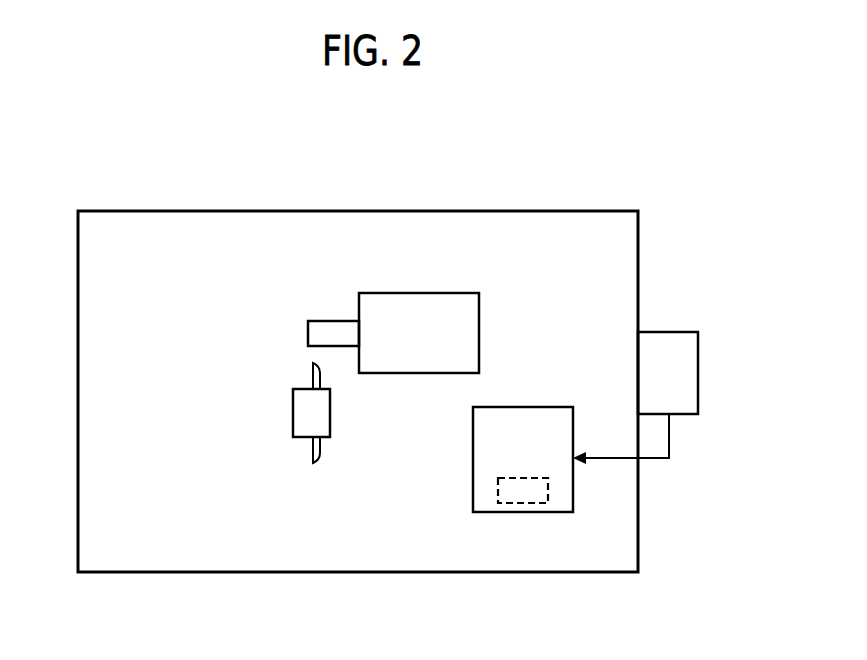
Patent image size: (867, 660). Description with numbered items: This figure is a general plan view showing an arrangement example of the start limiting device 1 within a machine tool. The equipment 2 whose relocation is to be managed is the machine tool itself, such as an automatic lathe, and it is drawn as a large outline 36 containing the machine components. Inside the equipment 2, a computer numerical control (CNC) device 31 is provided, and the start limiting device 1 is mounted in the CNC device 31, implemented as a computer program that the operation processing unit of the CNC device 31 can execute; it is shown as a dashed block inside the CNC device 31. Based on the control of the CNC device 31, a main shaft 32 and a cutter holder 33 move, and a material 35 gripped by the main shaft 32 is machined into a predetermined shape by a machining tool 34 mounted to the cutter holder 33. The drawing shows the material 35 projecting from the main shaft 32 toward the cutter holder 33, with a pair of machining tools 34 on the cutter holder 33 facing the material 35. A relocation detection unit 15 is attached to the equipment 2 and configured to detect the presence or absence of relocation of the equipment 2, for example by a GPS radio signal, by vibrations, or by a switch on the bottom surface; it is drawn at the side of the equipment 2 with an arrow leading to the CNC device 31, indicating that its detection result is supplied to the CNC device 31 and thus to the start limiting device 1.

The start limiting device 1 is at (522, 503).
The equipment 2 is at (376, 169).
The relocation detection unit 15 is at (680, 332).
The computer numerical control (CNC) device 31 is at (538, 407).
The main shaft 32 is at (425, 293).
The cutter holder 33 is at (293, 412).
The machining tool 34 is at (312, 372).
The material 35 is at (329, 321).
The machine body housing 36 is at (638, 546).